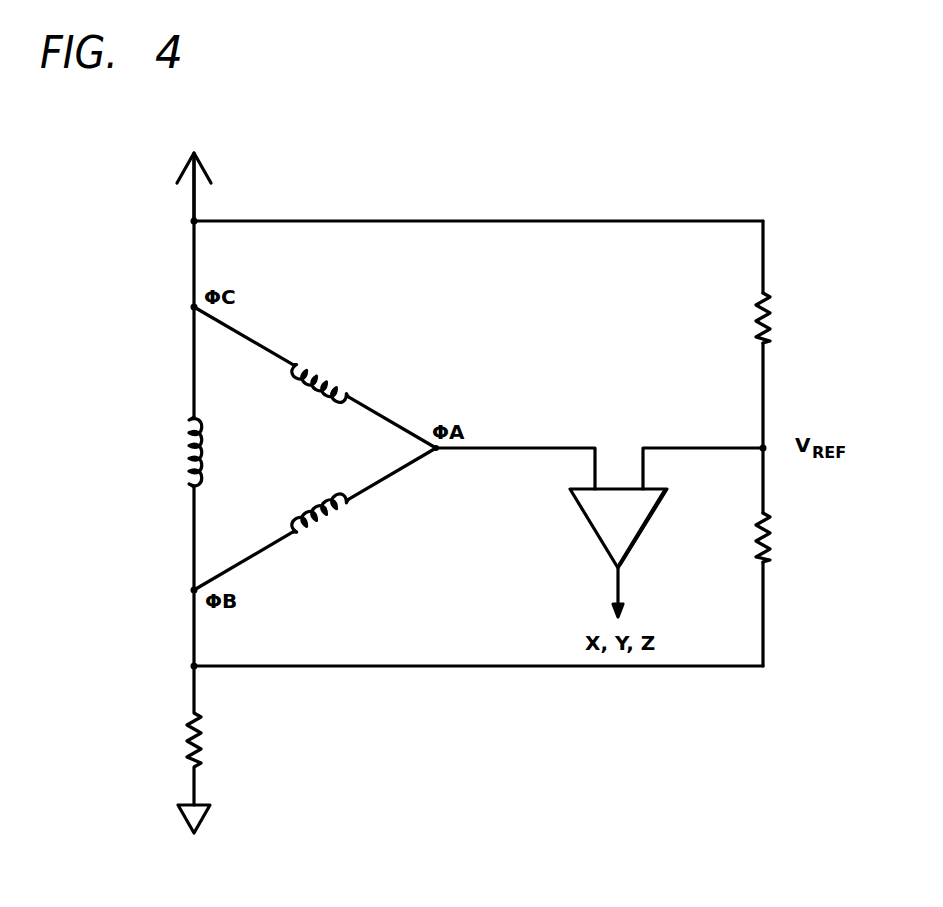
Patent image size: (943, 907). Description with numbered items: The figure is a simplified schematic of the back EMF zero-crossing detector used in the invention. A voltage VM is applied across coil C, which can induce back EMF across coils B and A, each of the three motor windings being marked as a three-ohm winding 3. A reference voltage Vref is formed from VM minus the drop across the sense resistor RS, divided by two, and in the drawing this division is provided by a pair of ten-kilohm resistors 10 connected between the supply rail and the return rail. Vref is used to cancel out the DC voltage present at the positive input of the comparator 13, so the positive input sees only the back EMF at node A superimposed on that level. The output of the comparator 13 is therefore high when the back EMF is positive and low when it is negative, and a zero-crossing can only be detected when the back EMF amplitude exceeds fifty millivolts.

The comparator 13 is at (643, 537).
The 3 ohm motor phase winding 3 is at (272, 449).
The 10K reference divider resistor 10 is at (802, 427).
The resistor RS is at (216, 740).
The voltage VM is at (195, 170).